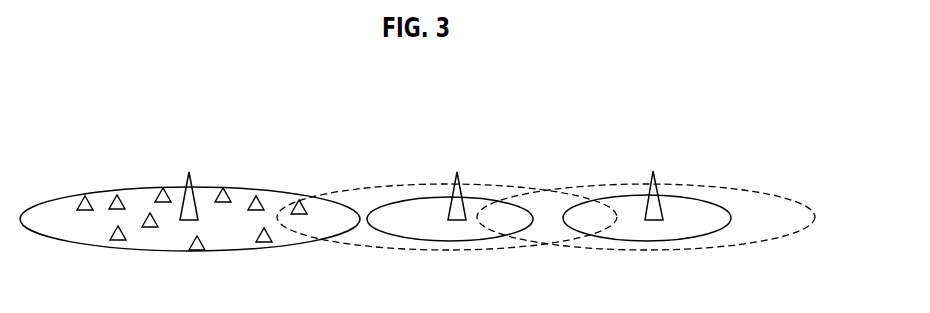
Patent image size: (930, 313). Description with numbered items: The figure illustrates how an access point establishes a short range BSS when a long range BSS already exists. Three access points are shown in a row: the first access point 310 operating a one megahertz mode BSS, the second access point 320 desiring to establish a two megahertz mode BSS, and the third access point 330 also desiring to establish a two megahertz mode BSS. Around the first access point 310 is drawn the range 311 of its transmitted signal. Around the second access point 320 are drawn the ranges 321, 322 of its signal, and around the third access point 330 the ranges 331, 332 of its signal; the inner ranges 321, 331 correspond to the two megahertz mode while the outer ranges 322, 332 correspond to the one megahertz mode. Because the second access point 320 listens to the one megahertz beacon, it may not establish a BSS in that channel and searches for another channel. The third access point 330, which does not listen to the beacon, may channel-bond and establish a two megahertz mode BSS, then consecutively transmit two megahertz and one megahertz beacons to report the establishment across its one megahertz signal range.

The AP1 310 is at (189, 146).
The range of a signal transmitted by the AP1 311 is at (175, 252).
The AP2 320 is at (457, 146).
The range of a signal transmitted by the AP2 321 is at (447, 240).
The range of a signal transmitted by the AP2 322 is at (392, 248).
The AP3 330 is at (652, 146).
The range of a signal transmitted by the AP3 331 is at (645, 240).
The range of a signal transmitted by the AP3 332 is at (683, 250).